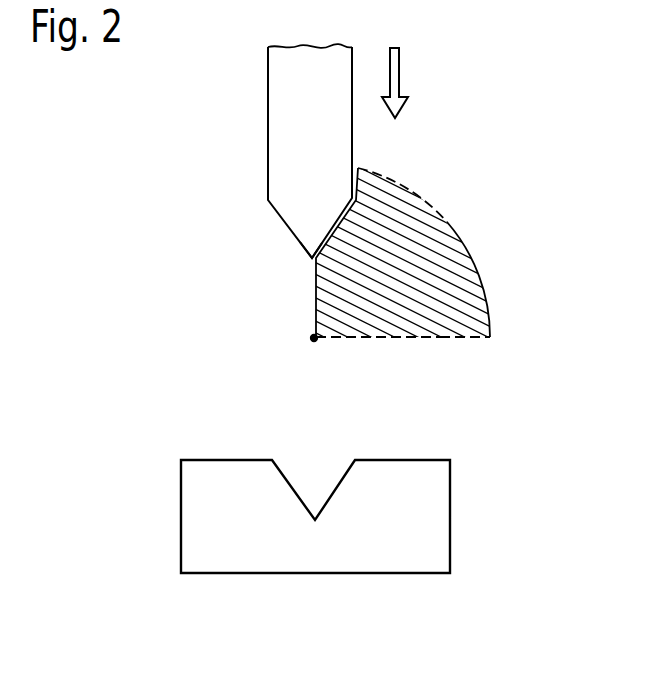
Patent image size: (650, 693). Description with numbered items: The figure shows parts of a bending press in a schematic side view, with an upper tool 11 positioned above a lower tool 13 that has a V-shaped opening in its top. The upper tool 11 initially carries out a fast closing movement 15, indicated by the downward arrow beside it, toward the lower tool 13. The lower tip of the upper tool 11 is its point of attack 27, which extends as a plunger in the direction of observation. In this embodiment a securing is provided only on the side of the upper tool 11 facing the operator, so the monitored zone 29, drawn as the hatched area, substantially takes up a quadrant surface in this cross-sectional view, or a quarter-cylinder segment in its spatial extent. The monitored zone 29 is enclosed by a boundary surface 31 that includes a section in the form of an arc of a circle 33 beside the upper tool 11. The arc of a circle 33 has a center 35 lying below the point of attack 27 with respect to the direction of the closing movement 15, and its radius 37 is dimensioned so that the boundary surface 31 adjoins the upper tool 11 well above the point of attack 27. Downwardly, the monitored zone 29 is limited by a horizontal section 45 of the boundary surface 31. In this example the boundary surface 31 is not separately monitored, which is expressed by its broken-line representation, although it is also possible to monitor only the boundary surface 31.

The upper tool 11 is at (278, 81).
The lower tool 13 is at (196, 502).
The closing movement 15 is at (393, 68).
The point of attack 27 is at (312, 257).
The monitored zone 29 is at (337, 290).
The boundary surface 31 is at (470, 248).
The arc of a circle 33 is at (433, 210).
The center 35 is at (313, 338).
The radius 37 is at (405, 340).
The horizontal section 45 is at (450, 338).